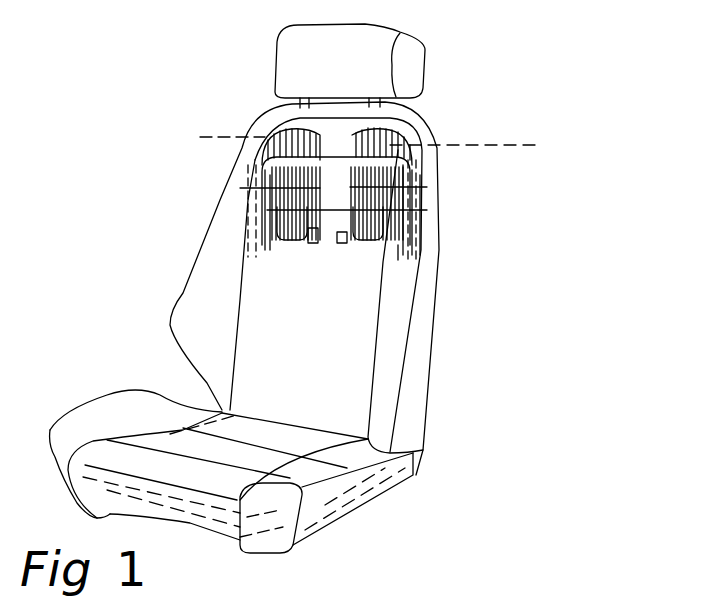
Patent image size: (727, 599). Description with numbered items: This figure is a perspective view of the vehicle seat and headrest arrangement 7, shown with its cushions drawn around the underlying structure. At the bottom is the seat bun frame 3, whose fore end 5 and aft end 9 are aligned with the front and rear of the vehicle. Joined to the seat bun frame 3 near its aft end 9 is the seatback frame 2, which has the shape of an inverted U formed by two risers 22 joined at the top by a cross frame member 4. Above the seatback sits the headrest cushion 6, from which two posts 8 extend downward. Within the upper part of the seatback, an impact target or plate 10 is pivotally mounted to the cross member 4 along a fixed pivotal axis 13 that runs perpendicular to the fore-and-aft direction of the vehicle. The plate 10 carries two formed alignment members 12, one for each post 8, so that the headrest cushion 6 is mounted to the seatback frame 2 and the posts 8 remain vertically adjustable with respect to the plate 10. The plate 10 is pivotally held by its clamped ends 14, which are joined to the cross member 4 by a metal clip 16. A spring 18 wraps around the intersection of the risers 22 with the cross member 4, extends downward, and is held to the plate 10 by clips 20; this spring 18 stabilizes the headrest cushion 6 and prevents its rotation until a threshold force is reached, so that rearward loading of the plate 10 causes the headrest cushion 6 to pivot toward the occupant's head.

The seatback frame 2 is at (407, 186).
The seat bun frame 3 is at (337, 505).
The cross frame member 4 is at (415, 210).
The fore end 5 is at (193, 522).
The headrest cushion 6 is at (373, 32).
The vehicle seat and headrest arrangement 7 is at (500, 96).
The posts 8 is at (299, 101).
The aft end 9 is at (403, 456).
The impact target or plate 10 is at (367, 247).
The alignment members 12 is at (255, 195).
The fixed pivotal axis 13 is at (500, 145).
The clamped ends 14 is at (289, 131).
The metal clip 16 is at (387, 145).
The spring 18 is at (262, 201).
The clips 20 is at (343, 247).
The risers 22 is at (247, 237).